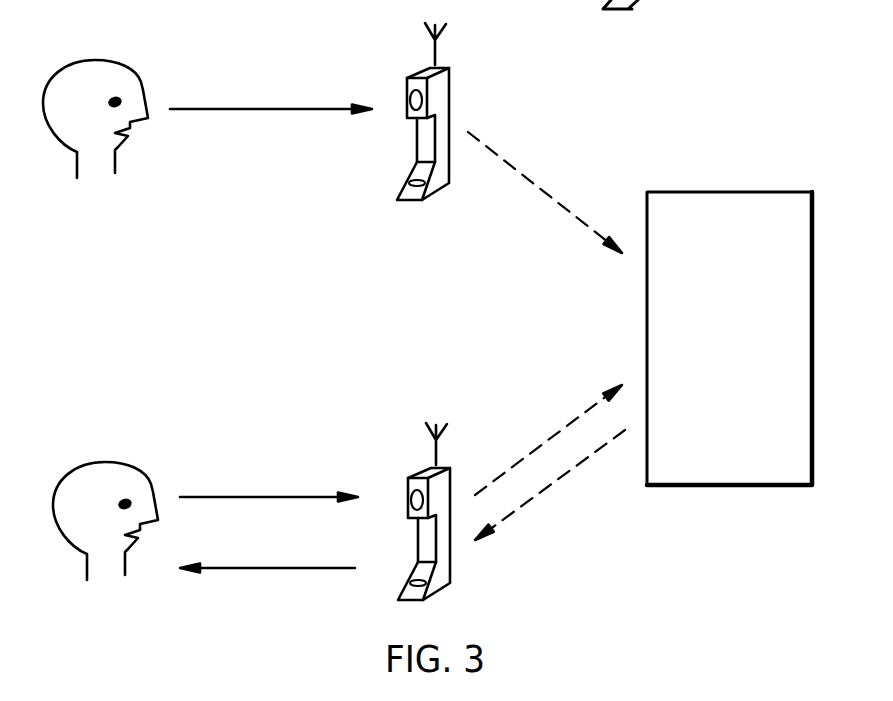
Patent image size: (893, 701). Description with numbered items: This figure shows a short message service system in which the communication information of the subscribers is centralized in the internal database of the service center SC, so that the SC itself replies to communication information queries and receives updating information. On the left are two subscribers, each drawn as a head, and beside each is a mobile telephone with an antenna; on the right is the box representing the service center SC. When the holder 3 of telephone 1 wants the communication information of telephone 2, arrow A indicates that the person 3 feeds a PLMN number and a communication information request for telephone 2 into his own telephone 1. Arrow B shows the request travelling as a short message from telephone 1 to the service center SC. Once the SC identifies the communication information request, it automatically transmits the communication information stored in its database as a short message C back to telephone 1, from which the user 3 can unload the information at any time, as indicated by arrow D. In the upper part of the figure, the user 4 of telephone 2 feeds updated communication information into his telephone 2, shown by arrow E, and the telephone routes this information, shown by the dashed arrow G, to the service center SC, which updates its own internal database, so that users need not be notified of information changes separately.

The telephone 1 is at (418, 543).
The telephone 2 is at (417, 145).
The holder of telephone 1 3 is at (102, 462).
The user of telephone 2 4 is at (93, 60).
The service center SC is at (647, 335).
The arrow A is at (287, 497).
The arrow B is at (560, 435).
The short message C is at (558, 480).
The arrow D is at (287, 568).
The arrow E is at (285, 109).
The arrow G is at (531, 183).